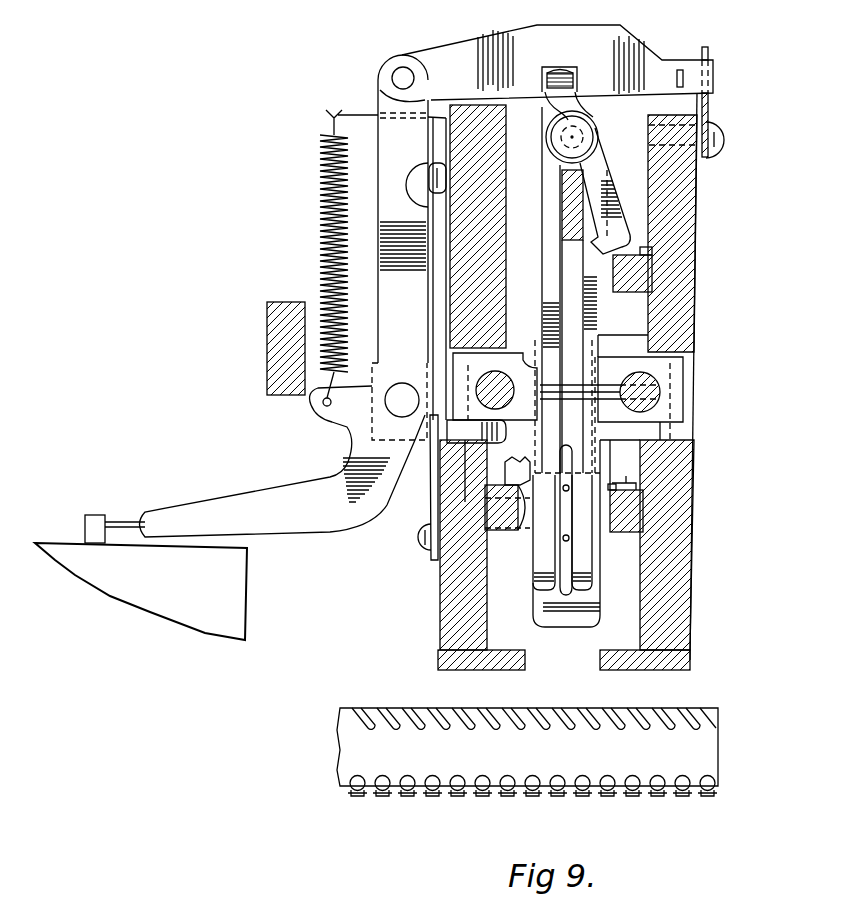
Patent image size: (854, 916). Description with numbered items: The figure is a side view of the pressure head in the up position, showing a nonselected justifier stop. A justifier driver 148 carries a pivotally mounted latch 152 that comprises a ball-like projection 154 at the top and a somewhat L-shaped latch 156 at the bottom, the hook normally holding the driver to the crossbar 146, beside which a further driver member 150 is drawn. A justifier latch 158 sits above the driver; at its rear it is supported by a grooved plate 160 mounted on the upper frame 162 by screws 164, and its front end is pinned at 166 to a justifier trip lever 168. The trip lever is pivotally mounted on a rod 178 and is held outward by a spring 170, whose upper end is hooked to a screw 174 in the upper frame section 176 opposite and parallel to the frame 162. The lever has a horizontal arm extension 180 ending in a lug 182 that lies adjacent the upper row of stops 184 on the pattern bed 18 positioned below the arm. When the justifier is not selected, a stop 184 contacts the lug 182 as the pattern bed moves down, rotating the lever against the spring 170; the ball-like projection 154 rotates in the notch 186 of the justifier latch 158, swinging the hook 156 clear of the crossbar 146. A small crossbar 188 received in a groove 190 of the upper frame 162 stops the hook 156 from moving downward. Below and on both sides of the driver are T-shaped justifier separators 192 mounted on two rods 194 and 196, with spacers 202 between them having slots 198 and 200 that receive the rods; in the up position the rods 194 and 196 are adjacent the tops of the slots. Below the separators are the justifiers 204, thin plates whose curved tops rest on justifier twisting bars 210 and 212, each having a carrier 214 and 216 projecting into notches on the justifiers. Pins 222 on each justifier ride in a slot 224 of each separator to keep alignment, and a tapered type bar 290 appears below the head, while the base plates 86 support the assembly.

The pattern bed 18 is at (148, 598).
The base plate 86 is at (438, 658).
The crossbar 146 is at (566, 199).
The justifier driver 148 is at (553, 183).
The rod 150 is at (566, 284).
The latch 152 is at (593, 117).
The ball-like projection 154 is at (553, 93).
The L-shaped latch 156 is at (613, 182).
The justifier latch 158 is at (457, 22).
The plate 160 is at (708, 50).
The upper frame 162 is at (690, 222).
The screws 164 is at (719, 124).
The pin 166 is at (403, 76).
The justifier trip lever 168 is at (390, 261).
The spring 170 is at (320, 207).
The screw 174 is at (405, 164).
The upper frame section 176 is at (497, 278).
The rod 178 is at (397, 402).
The horizontal arm extension 180 is at (238, 478).
The lug 182 is at (120, 522).
The stops 184 is at (98, 515).
The notch 186 is at (560, 70).
The small crossbar 188 is at (637, 281).
The slot or groove 190 is at (640, 246).
The justifier separators 192 is at (542, 552).
The rod 194 is at (645, 395).
The rod 196 is at (455, 440).
The slot 198 is at (662, 385).
The slot 200 is at (508, 368).
The spacers 202 is at (627, 347).
The justifiers 204 is at (553, 617).
The justifier twisting bar 210 is at (633, 512).
The justifier twisting bar 212 is at (493, 508).
The carrier 214 is at (613, 484).
The carrier 216 is at (540, 547).
The pins 222 is at (567, 540).
The slot 224 is at (567, 590).
The type bar 290 is at (707, 755).